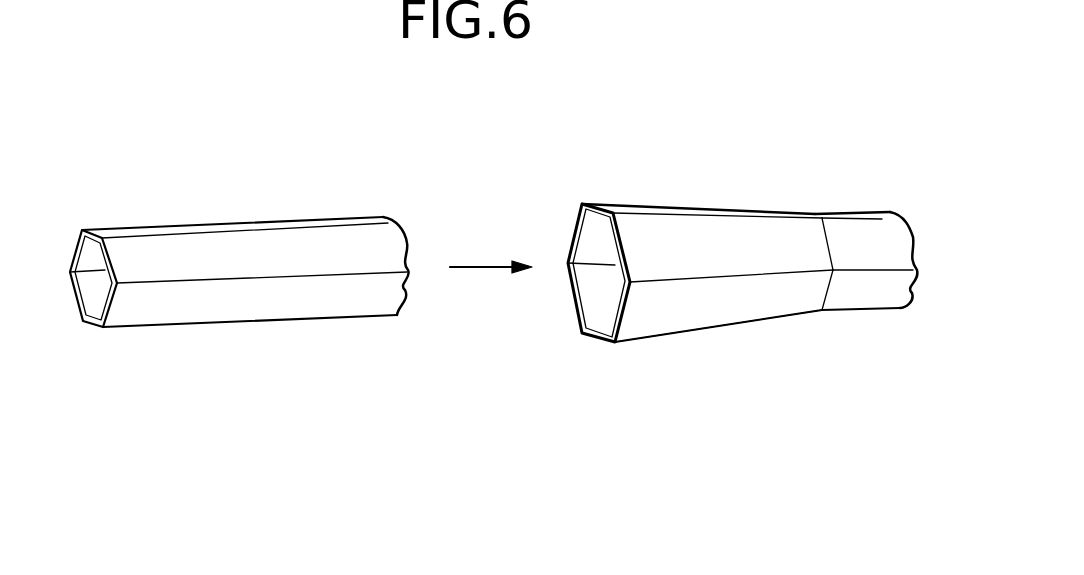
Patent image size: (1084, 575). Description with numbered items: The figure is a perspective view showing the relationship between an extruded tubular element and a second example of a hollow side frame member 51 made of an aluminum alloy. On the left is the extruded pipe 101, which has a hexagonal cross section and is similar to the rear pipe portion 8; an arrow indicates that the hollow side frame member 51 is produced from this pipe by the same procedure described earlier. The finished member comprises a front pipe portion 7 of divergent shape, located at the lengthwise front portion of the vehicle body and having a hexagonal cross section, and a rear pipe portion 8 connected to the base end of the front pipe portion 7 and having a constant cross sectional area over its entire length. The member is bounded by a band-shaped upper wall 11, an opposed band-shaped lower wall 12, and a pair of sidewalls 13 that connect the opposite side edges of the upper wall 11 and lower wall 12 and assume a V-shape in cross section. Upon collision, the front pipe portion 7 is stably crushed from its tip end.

The extruded pipe 101 is at (212, 200).
The front pipe portion 7 is at (673, 207).
The hollow side frame member 51 is at (842, 182).
The rear pipe portion 8 is at (885, 258).
The upper wall 11 is at (598, 205).
The sidewalls 13 is at (587, 297).
The lower wall 12 is at (593, 340).